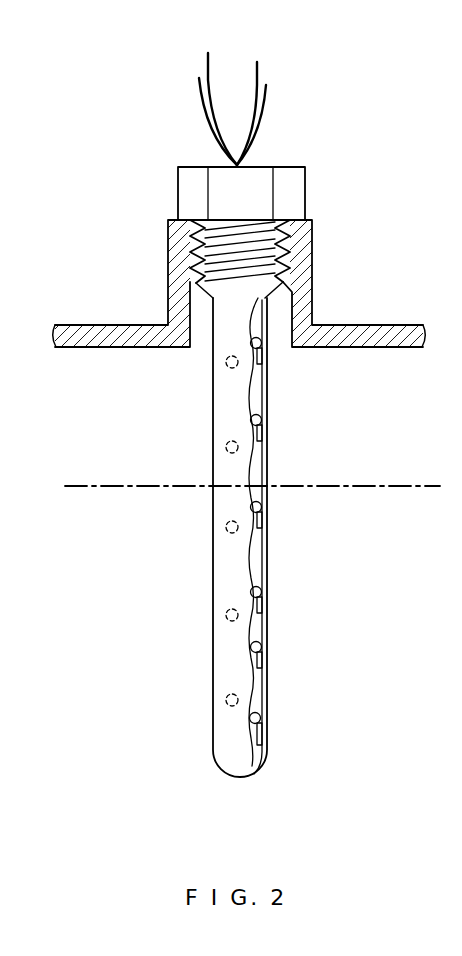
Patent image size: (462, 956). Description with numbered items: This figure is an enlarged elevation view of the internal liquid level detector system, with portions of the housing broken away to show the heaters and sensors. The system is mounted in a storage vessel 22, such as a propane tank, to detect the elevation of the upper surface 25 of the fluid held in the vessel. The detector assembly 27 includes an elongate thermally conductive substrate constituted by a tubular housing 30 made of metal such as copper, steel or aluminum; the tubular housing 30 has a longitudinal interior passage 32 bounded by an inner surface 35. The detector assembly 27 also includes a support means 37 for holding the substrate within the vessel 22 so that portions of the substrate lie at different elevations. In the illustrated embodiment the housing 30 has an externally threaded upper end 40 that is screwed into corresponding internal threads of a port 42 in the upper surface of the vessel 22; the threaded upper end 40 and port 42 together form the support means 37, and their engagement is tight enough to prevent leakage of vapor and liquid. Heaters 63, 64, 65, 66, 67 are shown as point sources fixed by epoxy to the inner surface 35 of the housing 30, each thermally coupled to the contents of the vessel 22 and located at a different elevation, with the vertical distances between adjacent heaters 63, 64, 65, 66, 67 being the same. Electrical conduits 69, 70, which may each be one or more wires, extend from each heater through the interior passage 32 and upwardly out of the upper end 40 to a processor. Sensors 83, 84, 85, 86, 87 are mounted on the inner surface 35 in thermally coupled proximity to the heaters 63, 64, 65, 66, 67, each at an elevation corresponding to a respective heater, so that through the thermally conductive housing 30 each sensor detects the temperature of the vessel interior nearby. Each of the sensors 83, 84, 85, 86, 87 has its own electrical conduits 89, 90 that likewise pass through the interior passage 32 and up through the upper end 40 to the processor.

The storage vessel 22 is at (393, 325).
The upper surface of the fluid 25 is at (400, 486).
The detector assembly 27 is at (208, 649).
The tubular housing 30 is at (274, 678).
The interior passage 32 is at (266, 562).
The inner surface 35 is at (262, 640).
The support means 37 is at (256, 207).
The externally threaded upper end 40 is at (282, 246).
The port 42 is at (200, 250).
The heater 63 is at (226, 364).
The heater 64 is at (226, 447).
The heater 65 is at (228, 534).
The heater 66 is at (226, 613).
The heater 67 is at (226, 700).
The electrical conduit 69 is at (199, 88).
The electrical conduit 70 is at (208, 60).
The sensor 83 is at (262, 343).
The sensor 84 is at (262, 420).
The sensor 85 is at (262, 507).
The sensor 86 is at (262, 585).
The sensor 87 is at (260, 735).
The electrical conduit 89 is at (257, 70).
The electrical conduit 90 is at (266, 96).